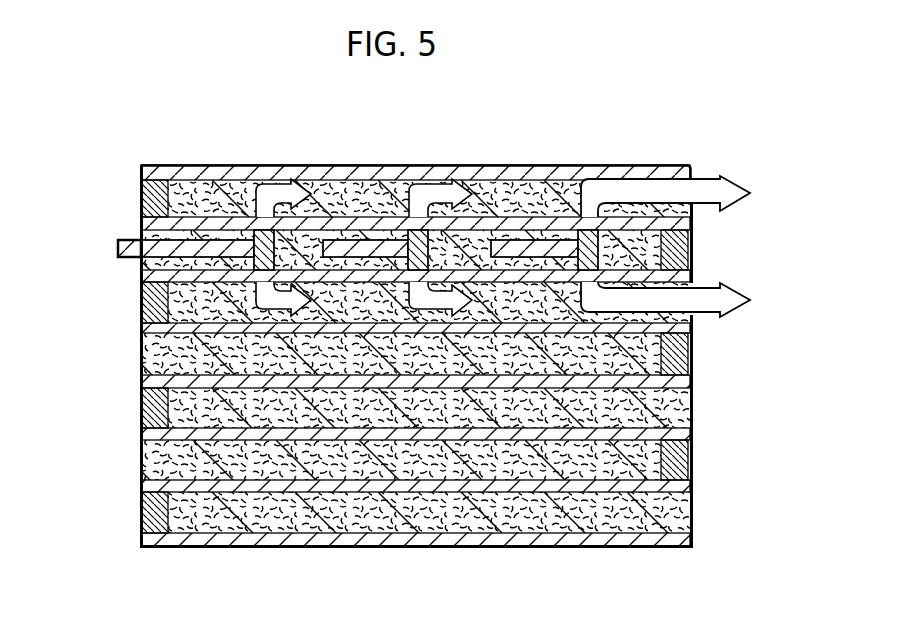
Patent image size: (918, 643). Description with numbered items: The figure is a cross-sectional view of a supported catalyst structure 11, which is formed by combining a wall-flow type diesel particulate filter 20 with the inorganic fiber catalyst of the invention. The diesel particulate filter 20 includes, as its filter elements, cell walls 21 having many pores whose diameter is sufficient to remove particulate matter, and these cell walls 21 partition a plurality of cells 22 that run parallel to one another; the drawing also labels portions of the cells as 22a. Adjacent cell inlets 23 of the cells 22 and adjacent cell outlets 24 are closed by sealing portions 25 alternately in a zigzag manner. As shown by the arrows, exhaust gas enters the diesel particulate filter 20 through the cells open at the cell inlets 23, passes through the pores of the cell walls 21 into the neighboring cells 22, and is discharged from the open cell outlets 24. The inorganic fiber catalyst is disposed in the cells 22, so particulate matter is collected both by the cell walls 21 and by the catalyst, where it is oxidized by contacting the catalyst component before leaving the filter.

The supported catalyst structure 11 is at (693, 126).
The diesel particulate filter 20 is at (462, 555).
The cell walls 21 is at (538, 218).
The cells 22 is at (337, 218).
The electrode tab 22a is at (143, 262).
The cell inlets 23 is at (140, 303).
The cell outlets 24 is at (692, 360).
The sealing portions 25 is at (153, 198).